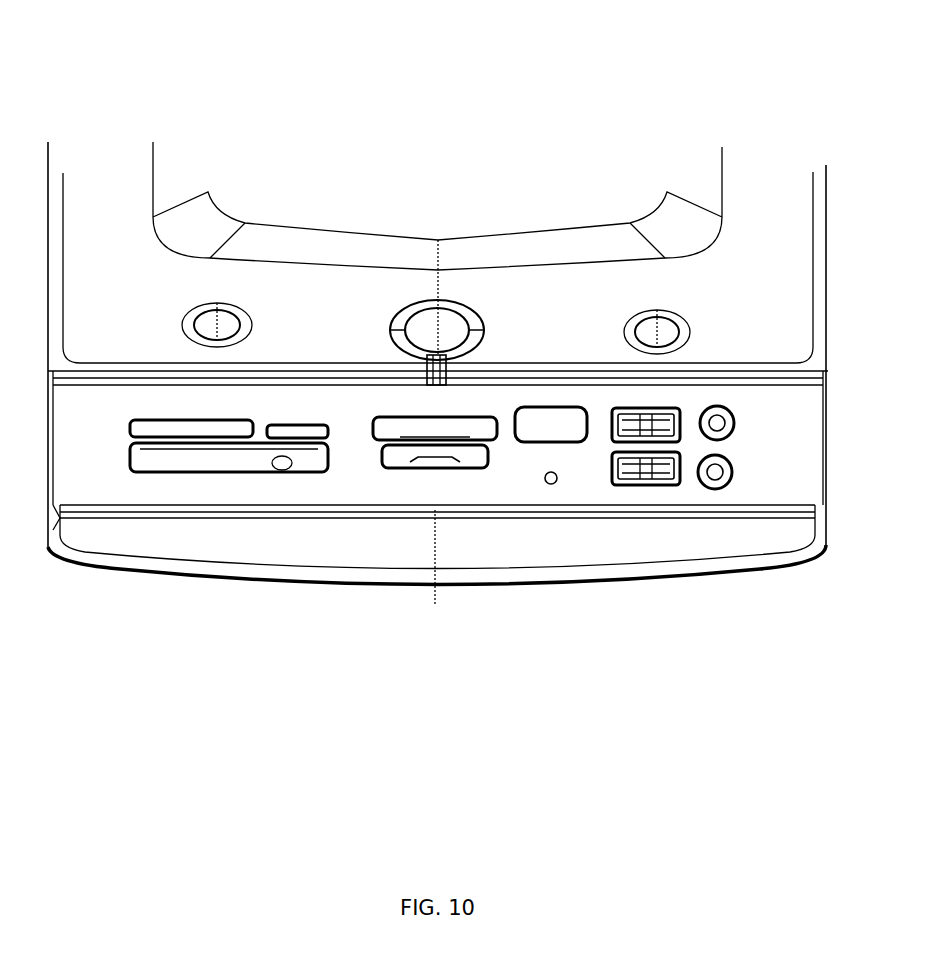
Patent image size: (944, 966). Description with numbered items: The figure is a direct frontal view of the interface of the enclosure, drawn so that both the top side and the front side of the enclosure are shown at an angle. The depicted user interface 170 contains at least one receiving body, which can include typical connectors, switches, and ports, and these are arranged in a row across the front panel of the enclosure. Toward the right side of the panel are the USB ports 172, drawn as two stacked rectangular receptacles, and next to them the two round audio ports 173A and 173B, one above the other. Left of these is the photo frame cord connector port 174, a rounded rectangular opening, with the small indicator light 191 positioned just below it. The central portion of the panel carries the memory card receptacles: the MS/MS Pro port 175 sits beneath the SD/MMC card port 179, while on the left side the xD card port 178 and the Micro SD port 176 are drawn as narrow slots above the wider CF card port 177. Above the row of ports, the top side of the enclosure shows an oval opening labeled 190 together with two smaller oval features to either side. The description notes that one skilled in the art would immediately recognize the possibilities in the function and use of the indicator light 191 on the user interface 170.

The user interface 170 is at (720, 585).
The USB ports 172 is at (625, 485).
The audio port 173A is at (718, 407).
The audio port 173B is at (728, 482).
The photo frame cord connector port 174 is at (532, 442).
The MS/MS Pro port 175 is at (440, 468).
The Micro SD port 176 is at (328, 437).
The CF card port 177 is at (143, 467).
The xD card port 178 is at (145, 418).
The SD/MMC card port 179 is at (377, 440).
The connector 190 is at (455, 325).
The indicator light 191 is at (553, 484).